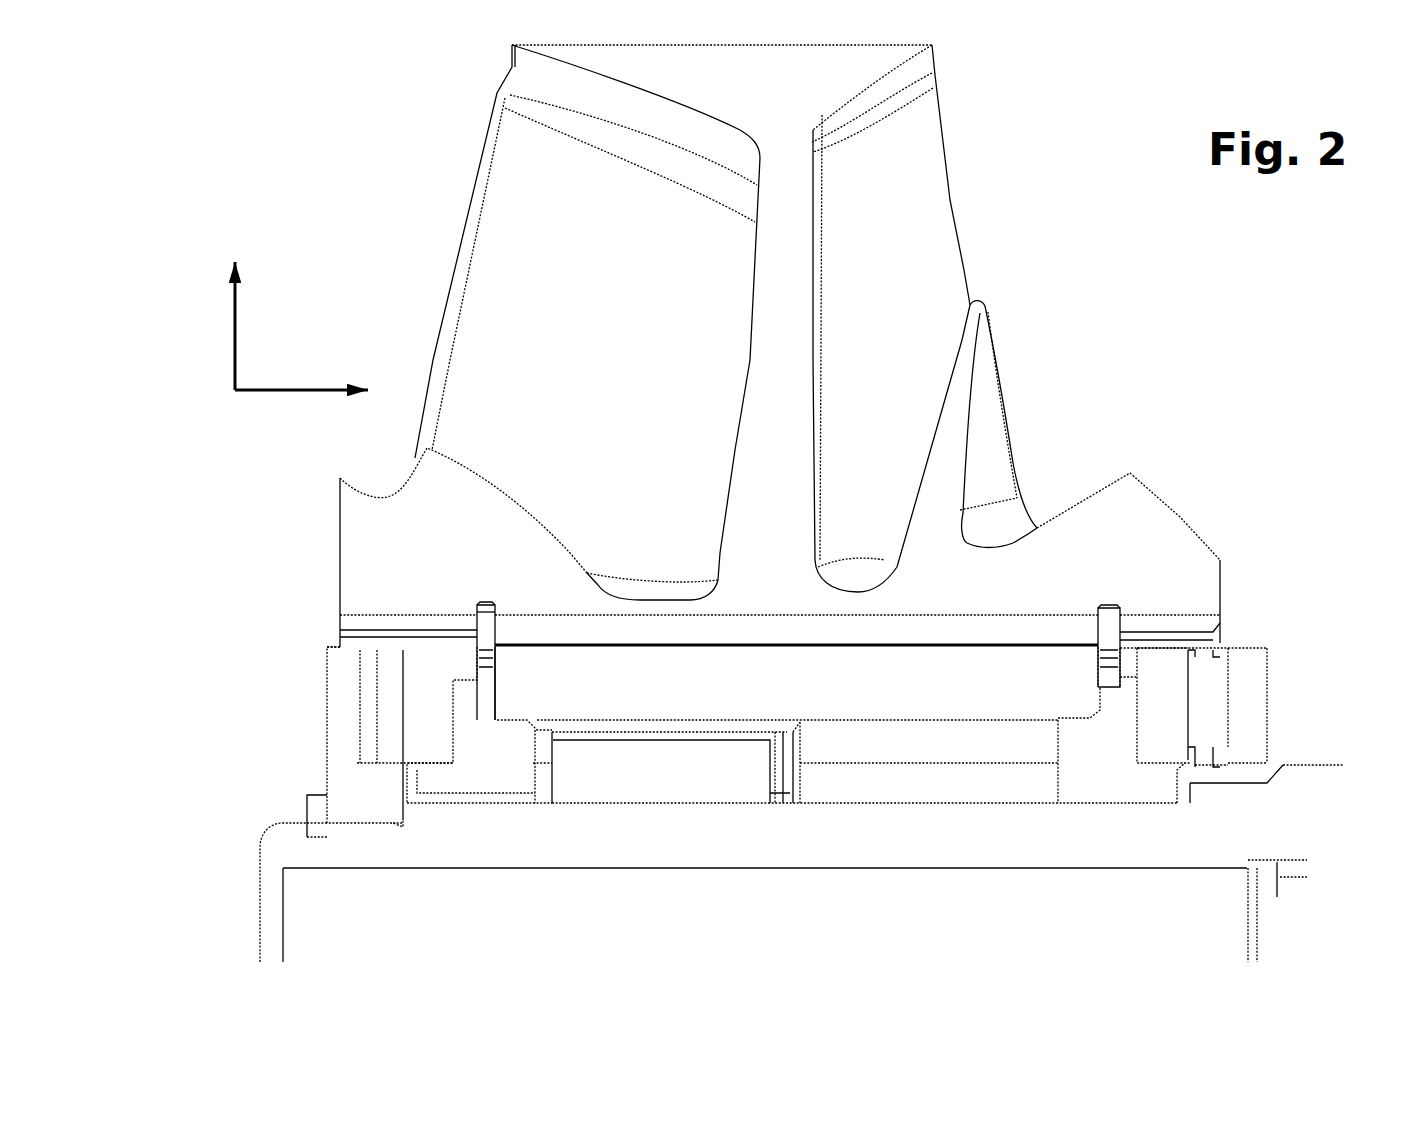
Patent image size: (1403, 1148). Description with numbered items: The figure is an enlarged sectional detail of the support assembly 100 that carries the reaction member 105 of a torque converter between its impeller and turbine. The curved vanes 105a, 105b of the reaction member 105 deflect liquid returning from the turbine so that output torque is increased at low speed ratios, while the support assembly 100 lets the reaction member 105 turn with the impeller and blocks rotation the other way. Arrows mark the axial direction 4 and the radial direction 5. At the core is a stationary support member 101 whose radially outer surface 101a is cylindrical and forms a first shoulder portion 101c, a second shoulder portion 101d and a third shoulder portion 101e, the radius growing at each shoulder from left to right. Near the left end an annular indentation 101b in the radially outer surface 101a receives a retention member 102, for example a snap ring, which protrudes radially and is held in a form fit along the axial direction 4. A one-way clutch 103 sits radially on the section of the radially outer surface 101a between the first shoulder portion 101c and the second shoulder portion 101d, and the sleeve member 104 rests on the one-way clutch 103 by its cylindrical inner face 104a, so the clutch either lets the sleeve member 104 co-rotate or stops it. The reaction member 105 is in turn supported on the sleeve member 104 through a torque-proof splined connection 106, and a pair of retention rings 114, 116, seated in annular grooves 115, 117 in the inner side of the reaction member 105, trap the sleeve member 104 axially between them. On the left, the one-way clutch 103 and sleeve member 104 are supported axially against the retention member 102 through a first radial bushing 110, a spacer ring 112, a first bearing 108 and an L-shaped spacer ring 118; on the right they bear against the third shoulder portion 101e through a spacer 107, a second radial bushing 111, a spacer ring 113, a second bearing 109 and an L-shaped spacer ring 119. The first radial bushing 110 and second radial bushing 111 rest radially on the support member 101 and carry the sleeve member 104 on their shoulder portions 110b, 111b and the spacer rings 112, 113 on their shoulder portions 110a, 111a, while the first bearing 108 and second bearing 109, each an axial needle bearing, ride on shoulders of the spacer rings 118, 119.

The axial direction 4 is at (352, 397).
The radial direction 5 is at (233, 293).
The support assembly 100 is at (1180, 311).
The support member 101 is at (963, 854).
The radially outer surface 101a is at (723, 802).
The indentation 101b is at (303, 843).
The first shoulder portion 101c is at (401, 832).
The second shoulder portion 101d is at (1201, 814).
The third shoulder portion 101e is at (1278, 791).
The retention member 102 is at (307, 808).
The one-way clutch 103 is at (614, 757).
The sleeve member 104 is at (848, 703).
The inner face of sleeve member 104a is at (687, 718).
The reaction member 105 is at (467, 210).
The vane 105a is at (815, 365).
The vane 105b is at (979, 300).
The splined connection 106 is at (816, 638).
The spacer 107 is at (857, 785).
The first bearing 108 is at (388, 678).
The second bearing 109 is at (1207, 697).
The first radial bushing 110 is at (513, 787).
The shoulder portion of first radial bushing 110a is at (447, 778).
The shoulder portion of first radial bushing 110b is at (508, 707).
The second radial bushing 111 is at (1083, 787).
The shoulder portion of second radial bushing 111a is at (1138, 778).
The shoulder portion of second radial bushing 111b is at (1078, 708).
The spacer ring 112 is at (435, 663).
The spacer ring 113 is at (1163, 657).
The retention ring 114 is at (492, 603).
The annular groove 115 is at (482, 603).
The retention ring 116 is at (1106, 607).
The annular groove 117 is at (1114, 607).
The spacer ring 118 is at (333, 708).
The spacer ring 119 is at (1252, 688).